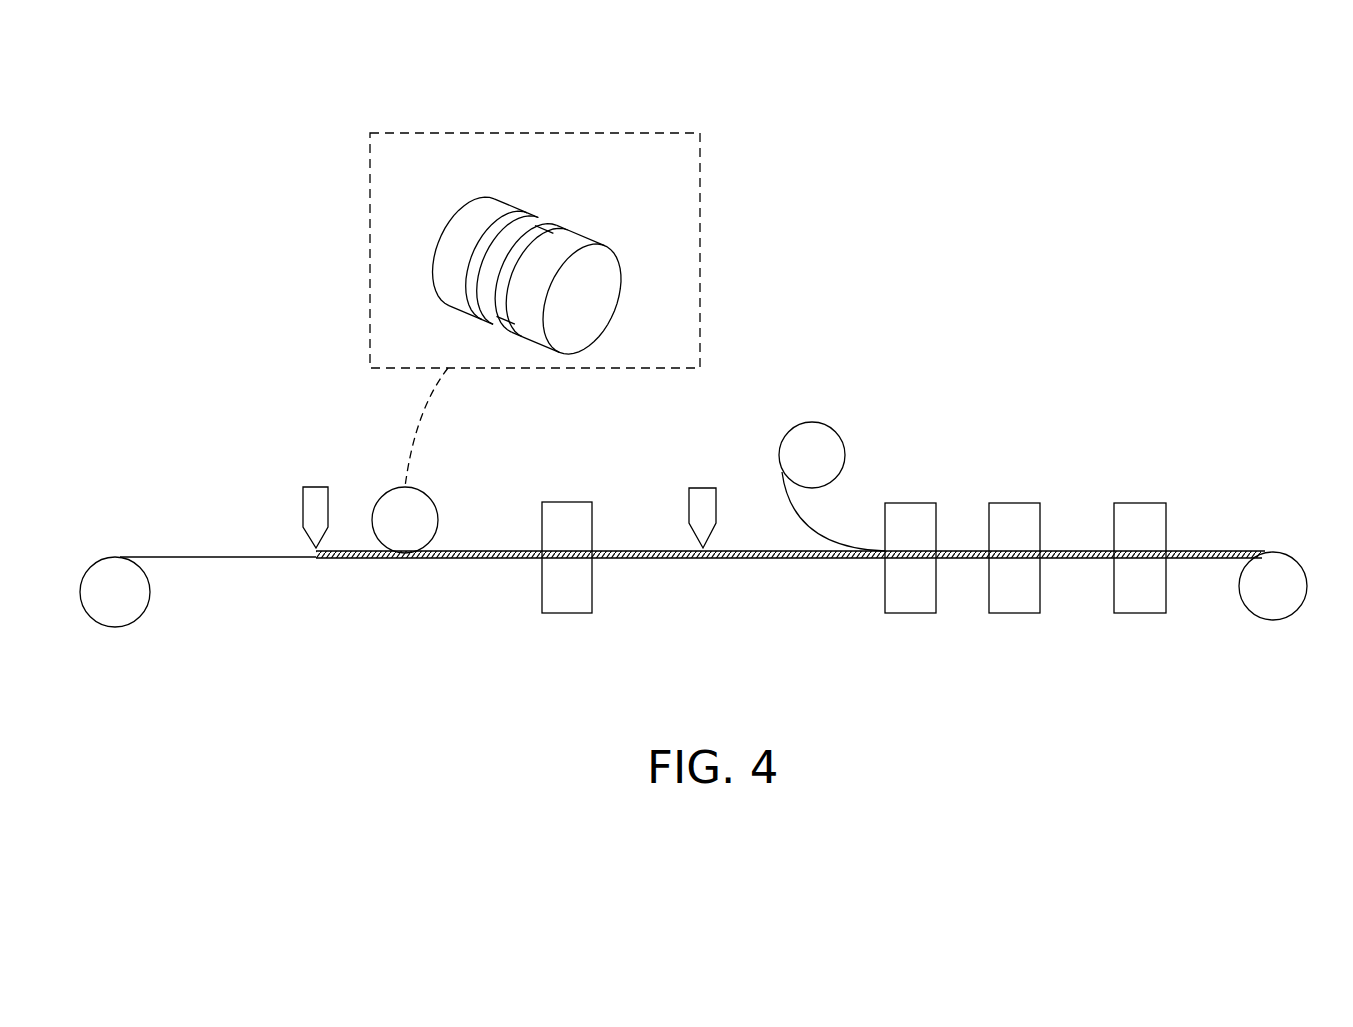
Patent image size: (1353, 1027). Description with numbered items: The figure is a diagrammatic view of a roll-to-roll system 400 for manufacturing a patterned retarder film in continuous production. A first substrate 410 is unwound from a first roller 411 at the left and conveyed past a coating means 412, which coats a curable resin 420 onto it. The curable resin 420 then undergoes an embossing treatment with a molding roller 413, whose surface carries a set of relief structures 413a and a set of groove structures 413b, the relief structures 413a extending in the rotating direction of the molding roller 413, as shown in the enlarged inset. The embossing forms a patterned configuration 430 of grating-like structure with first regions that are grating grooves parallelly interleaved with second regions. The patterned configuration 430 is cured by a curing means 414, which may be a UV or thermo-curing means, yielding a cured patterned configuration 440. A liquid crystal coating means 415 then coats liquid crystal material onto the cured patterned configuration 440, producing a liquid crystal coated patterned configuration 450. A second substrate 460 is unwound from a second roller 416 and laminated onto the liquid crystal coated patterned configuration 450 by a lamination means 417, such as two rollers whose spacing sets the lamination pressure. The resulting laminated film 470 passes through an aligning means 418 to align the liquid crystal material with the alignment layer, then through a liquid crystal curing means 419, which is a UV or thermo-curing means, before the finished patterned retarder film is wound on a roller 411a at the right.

The system 400 is at (1350, 93).
The first substrate 410 is at (197, 560).
The first roller 411 is at (110, 618).
The roller 411a is at (1270, 610).
The coating means 412 is at (318, 490).
The molding roller 413 is at (527, 343).
The set of relief structures 413a is at (530, 235).
The set of groove structures 413b is at (540, 250).
The curing means 414 is at (565, 615).
The liquid crystal coating means 415 is at (705, 496).
The second roller 416 is at (812, 430).
The lamination means 417 is at (897, 615).
The aligning means 418 is at (1022, 615).
The liquid crystal curing means 419 is at (1140, 615).
The curable resin 420 is at (341, 560).
The patterned configuration 430 is at (472, 560).
The cured patterned configuration 440 is at (662, 560).
The liquid crystal coated patterned configuration 450 is at (830, 560).
The second substrate 460 is at (822, 523).
The laminated film 470 is at (960, 560).